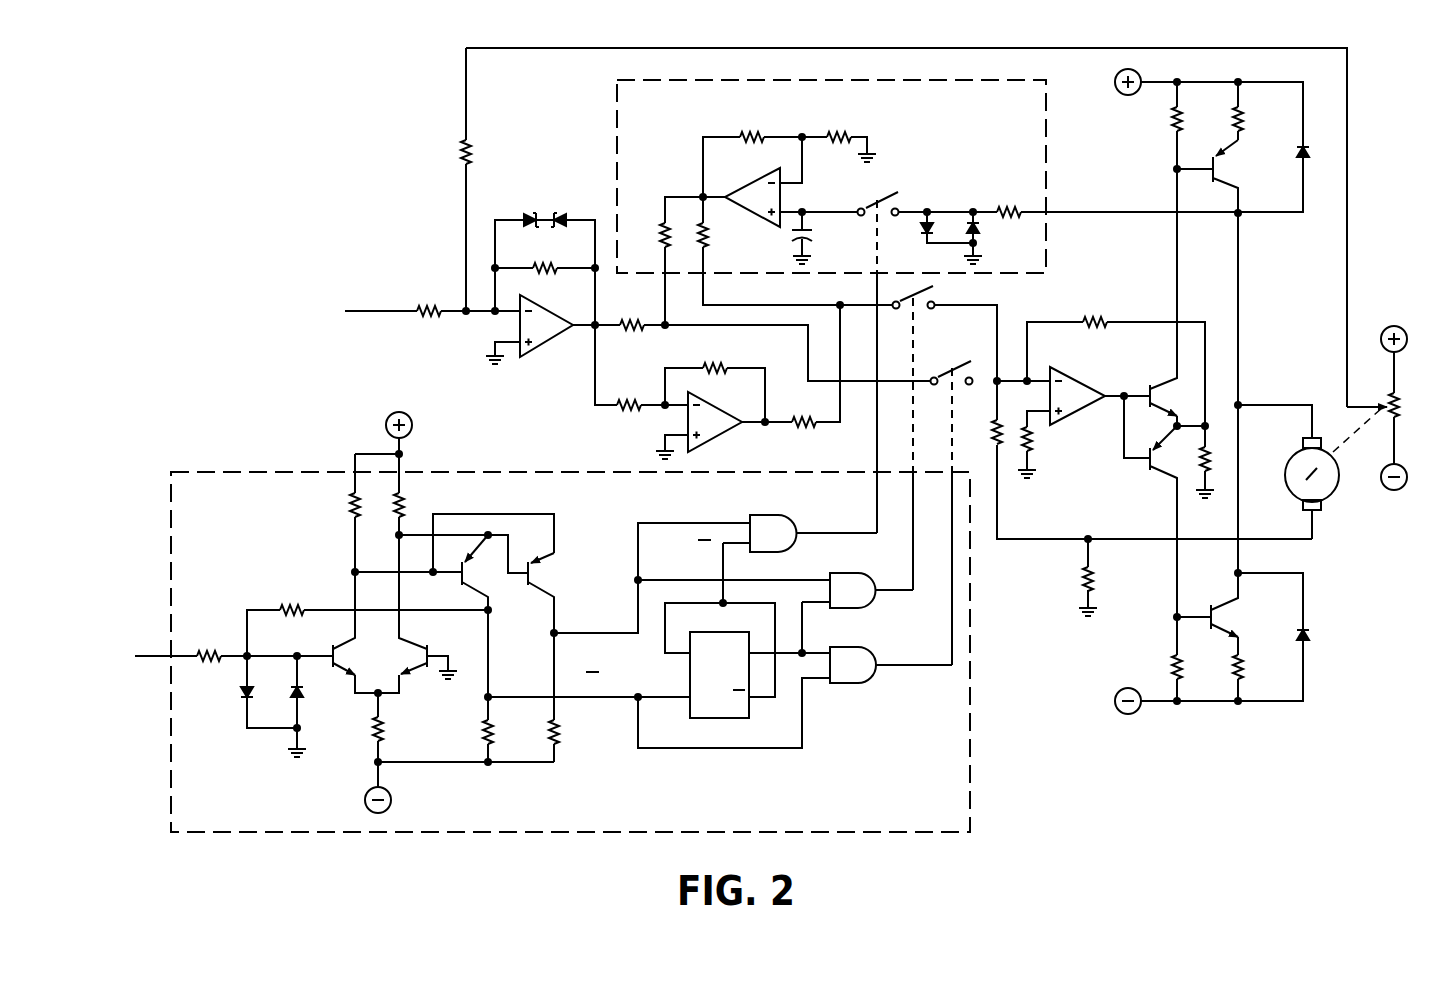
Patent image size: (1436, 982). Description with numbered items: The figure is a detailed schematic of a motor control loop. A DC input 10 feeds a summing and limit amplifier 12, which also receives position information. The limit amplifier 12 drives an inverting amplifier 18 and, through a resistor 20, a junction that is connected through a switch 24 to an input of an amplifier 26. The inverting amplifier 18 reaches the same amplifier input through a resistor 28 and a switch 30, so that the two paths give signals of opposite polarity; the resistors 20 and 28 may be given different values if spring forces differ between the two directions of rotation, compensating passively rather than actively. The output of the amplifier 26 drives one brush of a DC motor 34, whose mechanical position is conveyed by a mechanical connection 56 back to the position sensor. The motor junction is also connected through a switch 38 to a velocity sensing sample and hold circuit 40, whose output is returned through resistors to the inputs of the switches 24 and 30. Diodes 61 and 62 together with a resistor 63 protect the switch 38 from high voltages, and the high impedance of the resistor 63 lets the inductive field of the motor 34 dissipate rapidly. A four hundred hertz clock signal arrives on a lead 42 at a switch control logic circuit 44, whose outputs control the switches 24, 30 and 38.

The DC input 10 is at (388, 311).
The summing and limit amplifier 12 is at (513, 370).
The inverting amplifier 18 is at (657, 421).
The resistor 20 is at (634, 323).
The switch 24 is at (946, 363).
The amplifier 26 is at (1237, 739).
The resistor 28 is at (796, 418).
The switch 30 is at (945, 296).
The DC motor 34 is at (1328, 507).
The switch 38 is at (878, 188).
The velocity sensing sample and hold circuit 40 is at (617, 140).
The lead 42 is at (155, 656).
The switch control logic circuit 44 is at (257, 472).
The mechanical connection 56 is at (1341, 443).
The diode 61 is at (926, 240).
The diode 62 is at (984, 231).
The resistor 63 is at (1007, 211).